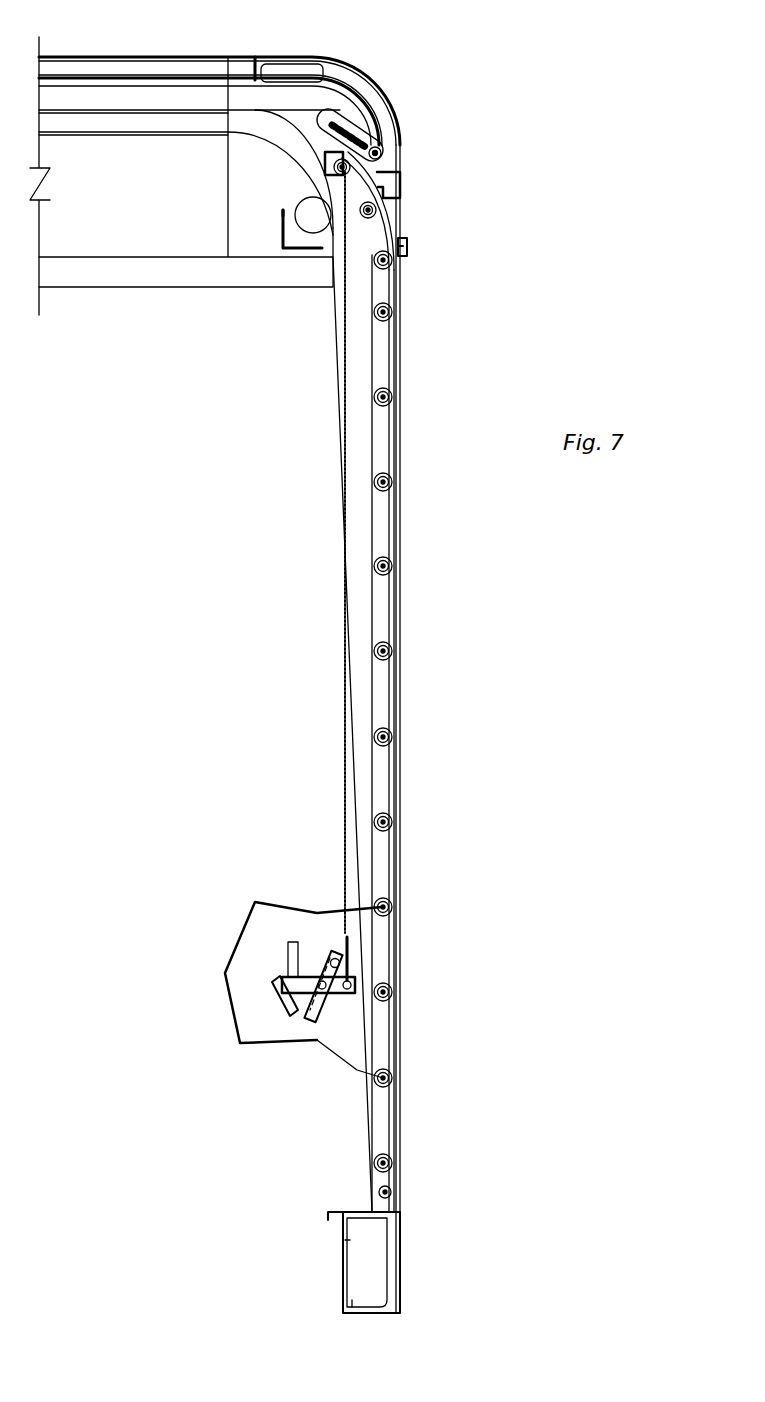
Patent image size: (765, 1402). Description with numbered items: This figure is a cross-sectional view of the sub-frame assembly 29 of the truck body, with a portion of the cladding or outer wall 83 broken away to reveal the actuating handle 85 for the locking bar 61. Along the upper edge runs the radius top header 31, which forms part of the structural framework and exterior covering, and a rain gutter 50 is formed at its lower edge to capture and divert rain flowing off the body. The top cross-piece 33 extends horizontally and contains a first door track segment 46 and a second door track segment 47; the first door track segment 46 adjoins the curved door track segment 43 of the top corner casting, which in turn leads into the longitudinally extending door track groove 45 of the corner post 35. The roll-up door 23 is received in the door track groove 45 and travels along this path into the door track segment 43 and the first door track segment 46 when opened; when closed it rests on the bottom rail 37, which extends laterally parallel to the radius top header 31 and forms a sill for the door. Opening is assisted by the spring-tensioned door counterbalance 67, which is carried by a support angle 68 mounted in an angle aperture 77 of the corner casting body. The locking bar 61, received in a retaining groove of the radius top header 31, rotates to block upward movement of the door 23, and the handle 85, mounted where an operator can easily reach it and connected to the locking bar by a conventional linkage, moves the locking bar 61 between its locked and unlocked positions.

The roll-up door 23 is at (397, 703).
The sub-frame assembly 29 is at (398, 99).
The radius top header 31 is at (348, 76).
The top cross-piece 33 is at (190, 55).
The corner post 35 is at (400, 492).
The bottom rail 37 is at (345, 1237).
The door track segment 43 is at (278, 135).
The door track groove 45 is at (360, 556).
The first door track segment 46 is at (153, 136).
The second door track segment 47 is at (120, 100).
The rain gutter 50 is at (407, 247).
The locking bar 61 is at (376, 115).
The door counterbalance 67 is at (318, 210).
The support angle 68 is at (282, 232).
The angle aperture 77 is at (283, 211).
The outer wall 83 is at (275, 893).
The actuating handle 85 is at (293, 957).